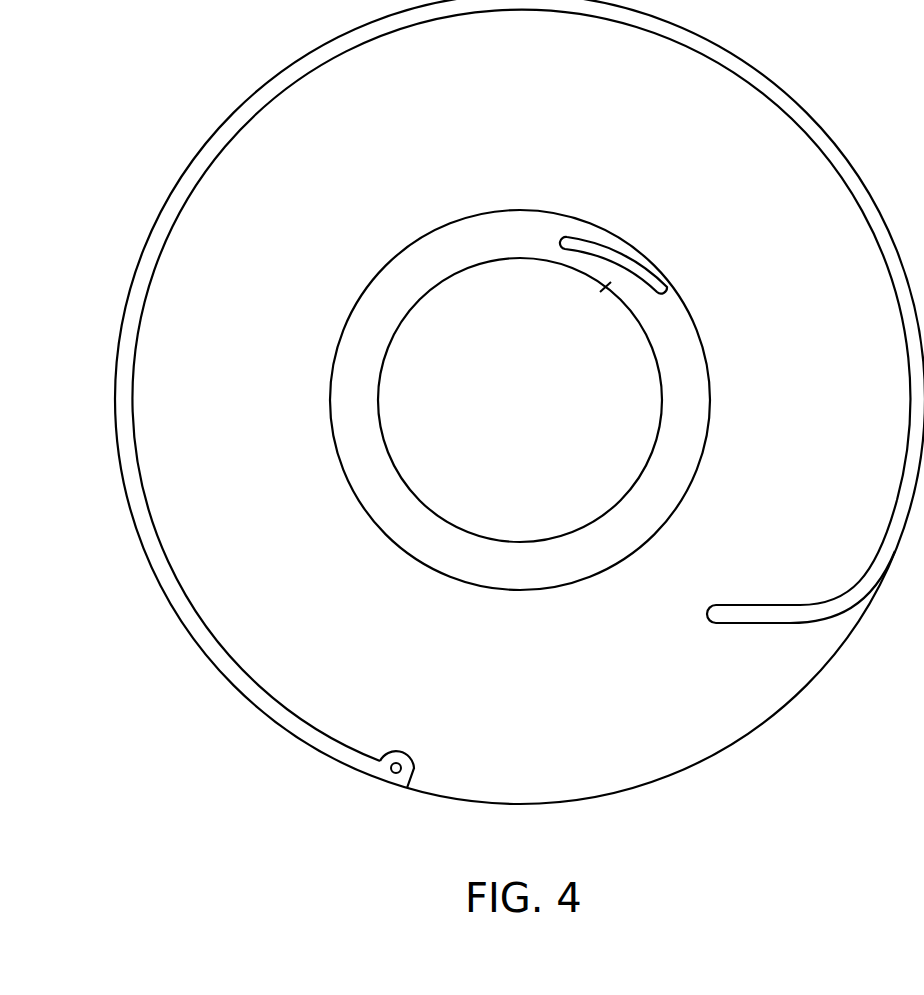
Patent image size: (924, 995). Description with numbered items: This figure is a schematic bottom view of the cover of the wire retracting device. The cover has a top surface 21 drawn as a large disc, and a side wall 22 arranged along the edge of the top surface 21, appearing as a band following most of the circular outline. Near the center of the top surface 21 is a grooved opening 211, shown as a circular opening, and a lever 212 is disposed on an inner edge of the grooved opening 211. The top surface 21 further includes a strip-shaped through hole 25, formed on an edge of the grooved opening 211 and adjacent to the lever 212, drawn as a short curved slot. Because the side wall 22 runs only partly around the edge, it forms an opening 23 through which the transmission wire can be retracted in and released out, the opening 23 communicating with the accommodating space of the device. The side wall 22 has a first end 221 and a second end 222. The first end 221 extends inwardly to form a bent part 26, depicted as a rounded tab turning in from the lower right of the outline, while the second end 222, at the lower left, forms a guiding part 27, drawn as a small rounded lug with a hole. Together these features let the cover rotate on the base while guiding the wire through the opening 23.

The top surface 21 is at (808, 183).
The grooved opening 211 is at (404, 402).
The lever 212 is at (604, 292).
The side wall 22 is at (797, 103).
The first end 221 is at (732, 623).
The second end 222 is at (329, 746).
The opening 23 is at (660, 737).
The strip-shaped through hole 25 is at (633, 267).
The bent part 26 is at (785, 615).
The guiding part 27 is at (398, 757).